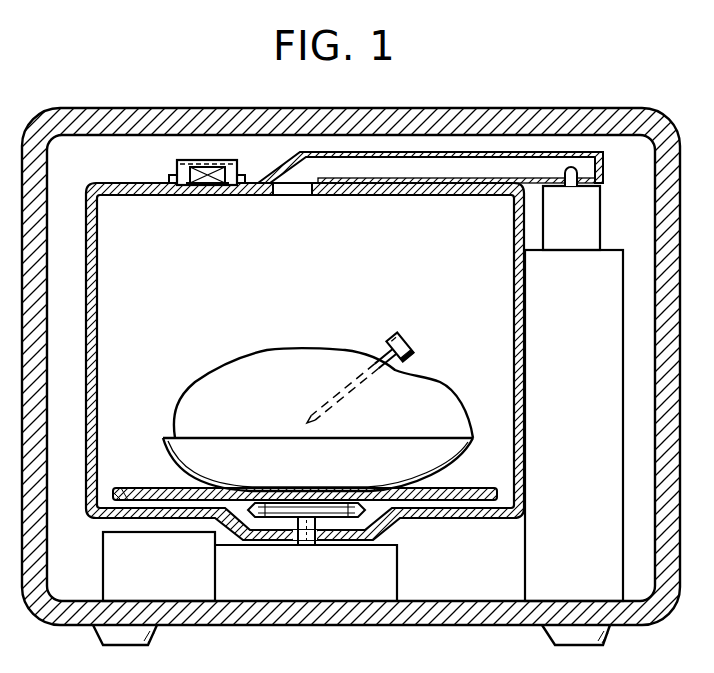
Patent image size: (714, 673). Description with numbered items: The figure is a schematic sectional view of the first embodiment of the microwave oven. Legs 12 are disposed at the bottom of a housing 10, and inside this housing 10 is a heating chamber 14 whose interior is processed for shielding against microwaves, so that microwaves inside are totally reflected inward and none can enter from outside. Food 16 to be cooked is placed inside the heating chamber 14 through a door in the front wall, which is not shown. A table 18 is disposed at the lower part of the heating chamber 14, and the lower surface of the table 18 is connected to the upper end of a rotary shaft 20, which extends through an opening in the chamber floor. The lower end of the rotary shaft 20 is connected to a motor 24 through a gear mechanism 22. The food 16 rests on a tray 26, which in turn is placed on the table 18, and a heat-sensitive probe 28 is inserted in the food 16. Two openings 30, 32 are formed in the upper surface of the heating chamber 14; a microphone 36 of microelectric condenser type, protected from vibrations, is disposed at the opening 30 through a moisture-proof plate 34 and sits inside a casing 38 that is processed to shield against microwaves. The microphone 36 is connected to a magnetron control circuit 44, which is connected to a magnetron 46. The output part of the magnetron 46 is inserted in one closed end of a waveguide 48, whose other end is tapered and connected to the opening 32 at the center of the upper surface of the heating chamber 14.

The housing 10 is at (469, 113).
The legs 12 is at (153, 642).
The heating chamber 14 is at (378, 190).
The food 16 is at (272, 357).
The table 18 is at (134, 488).
The rotary shaft 20 is at (310, 548).
The gear mechanism 22 is at (398, 565).
The motor 24 is at (107, 562).
The tray 26 is at (172, 440).
The heat-sensitive probe 28 is at (413, 344).
The opening 30 is at (194, 188).
The opening 32 is at (301, 192).
The moisture-proof plate 34 is at (223, 188).
The microphone 36 is at (238, 171).
The casing 38 is at (177, 168).
The magnetron control circuit 44 is at (525, 558).
The magnetron 46 is at (600, 218).
The waveguide 48 is at (410, 152).